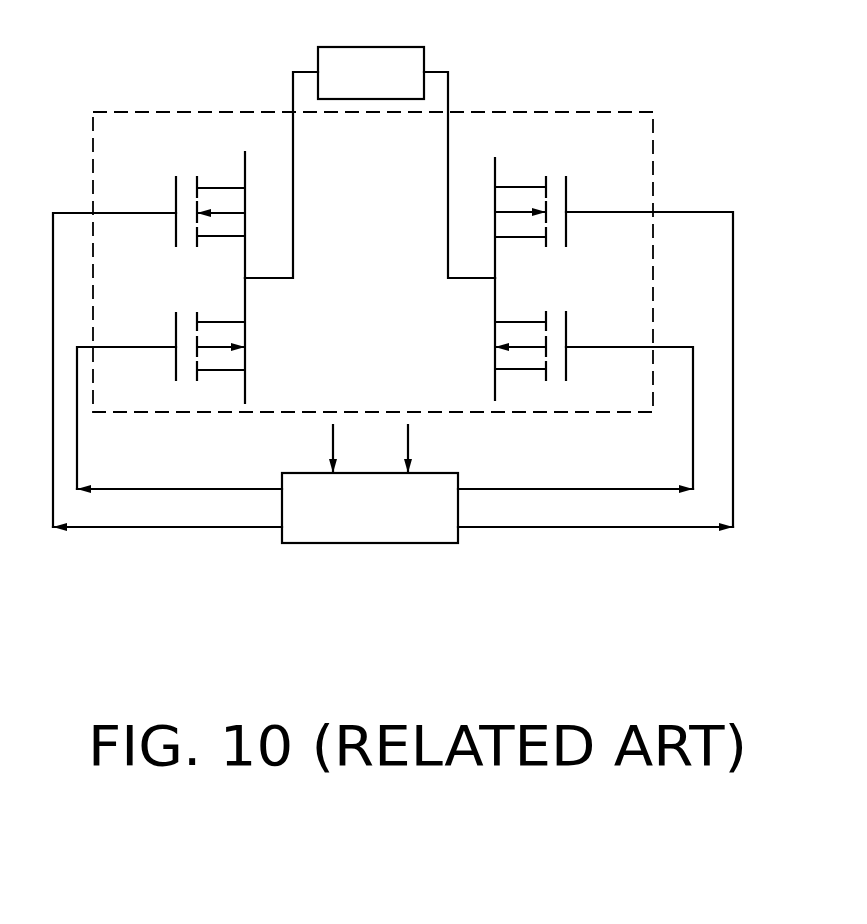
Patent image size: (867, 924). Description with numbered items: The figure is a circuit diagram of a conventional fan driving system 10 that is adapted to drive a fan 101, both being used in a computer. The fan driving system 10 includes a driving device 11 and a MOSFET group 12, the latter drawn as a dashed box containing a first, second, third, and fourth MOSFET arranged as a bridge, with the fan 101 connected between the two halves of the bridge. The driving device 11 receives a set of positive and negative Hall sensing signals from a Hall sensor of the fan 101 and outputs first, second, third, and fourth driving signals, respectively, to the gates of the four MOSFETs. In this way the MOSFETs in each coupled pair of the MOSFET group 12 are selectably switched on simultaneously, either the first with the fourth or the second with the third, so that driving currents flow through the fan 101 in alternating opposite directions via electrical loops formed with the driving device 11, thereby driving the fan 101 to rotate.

The fan driving system 10 is at (409, 313).
The fan 101 is at (372, 75).
The MOSFET group 12 is at (535, 111).
The driving device 11 is at (330, 523).